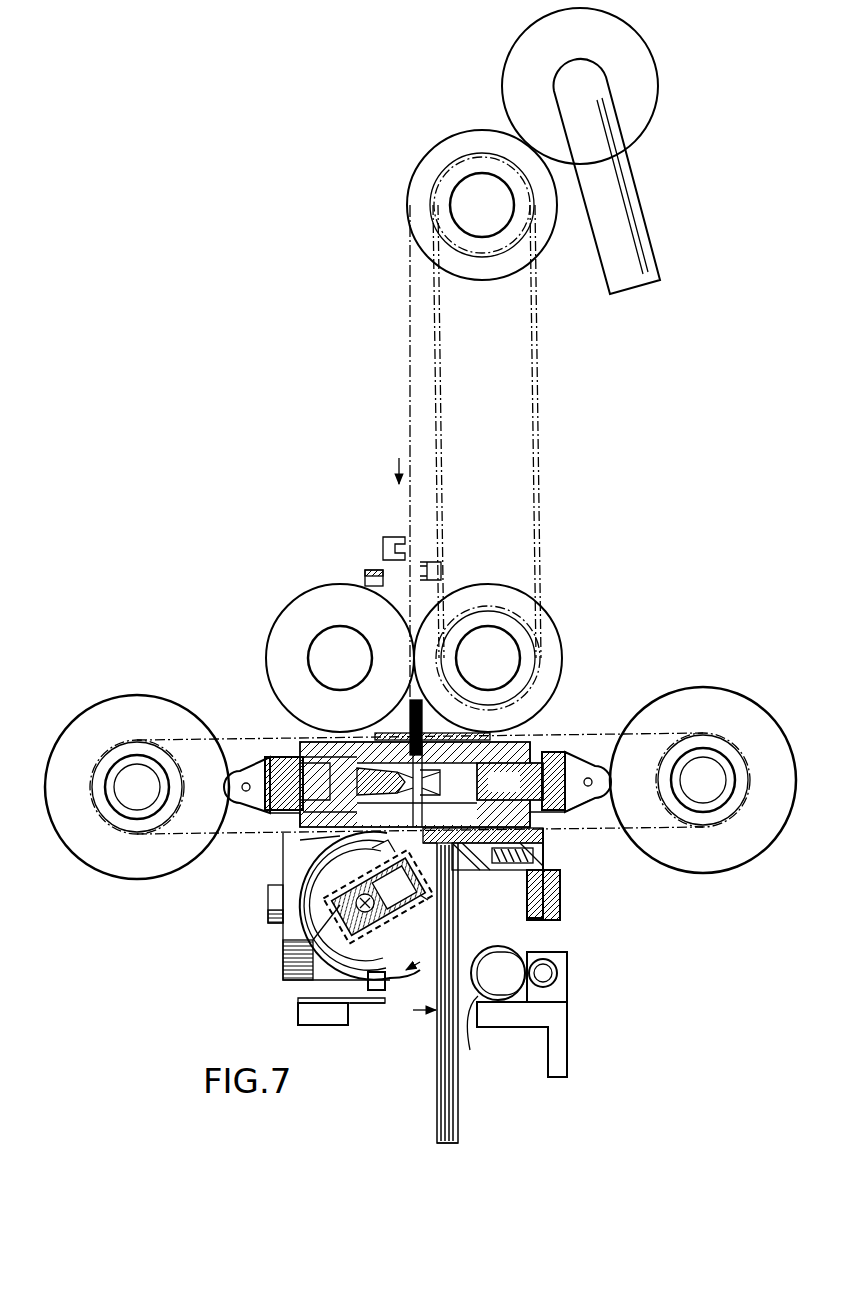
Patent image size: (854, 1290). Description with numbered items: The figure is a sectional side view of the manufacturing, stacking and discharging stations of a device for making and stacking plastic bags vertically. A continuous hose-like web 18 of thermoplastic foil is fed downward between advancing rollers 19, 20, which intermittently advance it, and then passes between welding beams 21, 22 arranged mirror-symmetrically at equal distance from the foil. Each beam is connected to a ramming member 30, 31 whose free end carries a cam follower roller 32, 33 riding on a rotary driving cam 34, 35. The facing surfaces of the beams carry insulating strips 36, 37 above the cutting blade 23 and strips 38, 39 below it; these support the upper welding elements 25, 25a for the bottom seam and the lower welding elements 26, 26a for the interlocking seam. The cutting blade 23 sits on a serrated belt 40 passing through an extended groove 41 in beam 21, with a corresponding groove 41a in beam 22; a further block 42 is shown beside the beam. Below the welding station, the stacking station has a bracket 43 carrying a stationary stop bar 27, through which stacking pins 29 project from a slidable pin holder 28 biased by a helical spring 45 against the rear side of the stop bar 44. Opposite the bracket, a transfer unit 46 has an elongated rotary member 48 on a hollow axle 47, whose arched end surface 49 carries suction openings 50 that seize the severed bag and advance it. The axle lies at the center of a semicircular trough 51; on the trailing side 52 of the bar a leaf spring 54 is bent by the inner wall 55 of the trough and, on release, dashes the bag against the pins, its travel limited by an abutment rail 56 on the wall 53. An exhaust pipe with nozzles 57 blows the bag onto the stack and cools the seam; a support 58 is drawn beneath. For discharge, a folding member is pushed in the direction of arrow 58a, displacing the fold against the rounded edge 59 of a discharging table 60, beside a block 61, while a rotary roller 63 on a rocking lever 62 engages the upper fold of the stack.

The hose-like web 18 is at (410, 416).
The advancing roller 19 is at (313, 598).
The advancing roller 20 is at (492, 590).
The welding beam 21 is at (370, 733).
The welding beam 22 is at (540, 750).
The cutting blade 23 is at (530, 745).
The upper welding element 25 is at (372, 768).
The upper welding element 25a is at (448, 757).
The lower welding element 26 is at (408, 822).
The lower welding element 26a is at (510, 781).
The stop bar 27 is at (460, 893).
The pin holder 28 is at (560, 838).
The stacking pins 29 is at (437, 870).
The ramming member 30 is at (366, 578).
The ramming member 31 is at (590, 797).
The roller 32 is at (232, 765).
The roller 33 is at (592, 763).
The rotary driving cam 34 is at (147, 868).
The rotary driving cam 35 is at (740, 855).
The insulating strip 36 is at (410, 700).
The insulating strip 37 is at (448, 567).
The insulating strip 38 is at (373, 852).
The insulating strip 39 is at (428, 815).
The serrated belt 40 is at (333, 770).
The extended groove 41 is at (293, 818).
The extended groove 41a is at (545, 812).
The block 42 is at (320, 760).
The bracket 43 is at (546, 873).
The stop bar 44 is at (473, 863).
The helical spring 45 is at (560, 902).
The transfer unit 46 is at (272, 970).
The hollow axle 47 is at (348, 905).
The rotary member 48 is at (380, 930).
The arched end surface 49 is at (423, 905).
The suction openings 50 is at (404, 924).
The semicircular trough 51 is at (320, 958).
The trailing side 52 is at (420, 962).
The wall 53 is at (337, 875).
The leaf spring 54 is at (300, 840).
The inner wall 55 is at (331, 1003).
The abutment rail 56 is at (369, 1037).
The nozzles 57 is at (421, 1011).
The support 58 is at (373, 1003).
The arrow 58a is at (430, 1097).
The rounded edge 59 is at (483, 1003).
The discharging table 60 is at (527, 1017).
The block 61 is at (557, 990).
The rocking lever 62 is at (520, 949).
The rotary roller 63 is at (478, 1036).